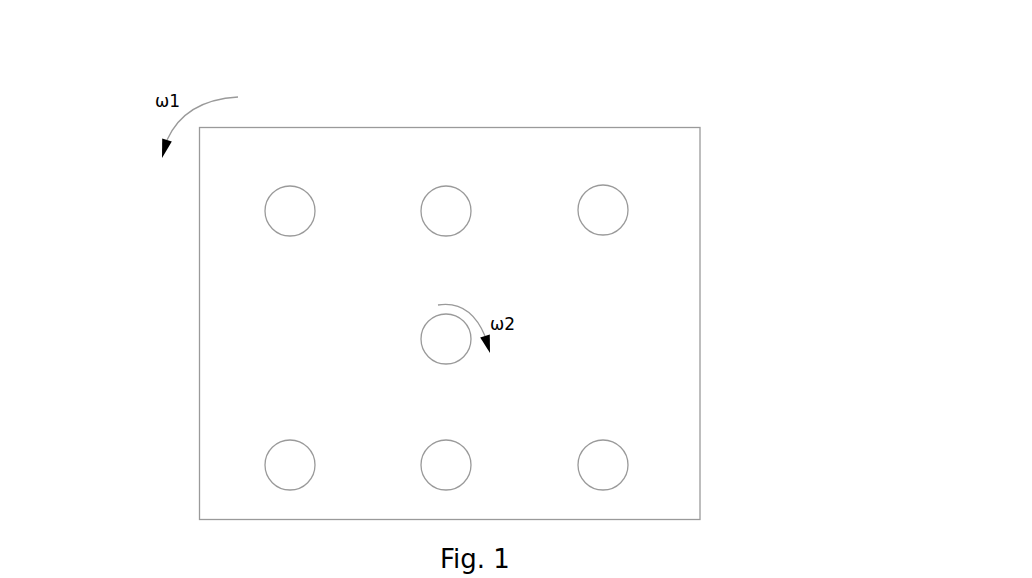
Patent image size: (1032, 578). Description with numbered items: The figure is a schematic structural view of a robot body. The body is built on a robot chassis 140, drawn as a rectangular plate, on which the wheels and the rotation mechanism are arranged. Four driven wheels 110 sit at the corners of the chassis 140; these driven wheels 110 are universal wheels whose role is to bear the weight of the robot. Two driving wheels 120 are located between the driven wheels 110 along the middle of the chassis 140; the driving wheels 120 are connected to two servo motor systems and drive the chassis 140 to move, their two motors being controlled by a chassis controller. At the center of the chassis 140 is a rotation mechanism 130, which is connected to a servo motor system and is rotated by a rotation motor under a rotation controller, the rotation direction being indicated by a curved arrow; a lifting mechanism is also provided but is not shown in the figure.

The driven wheels 110 is at (293, 470).
The driving wheels 120 is at (449, 469).
The rotation mechanism 130 is at (448, 341).
The robot chassis 140 is at (683, 168).